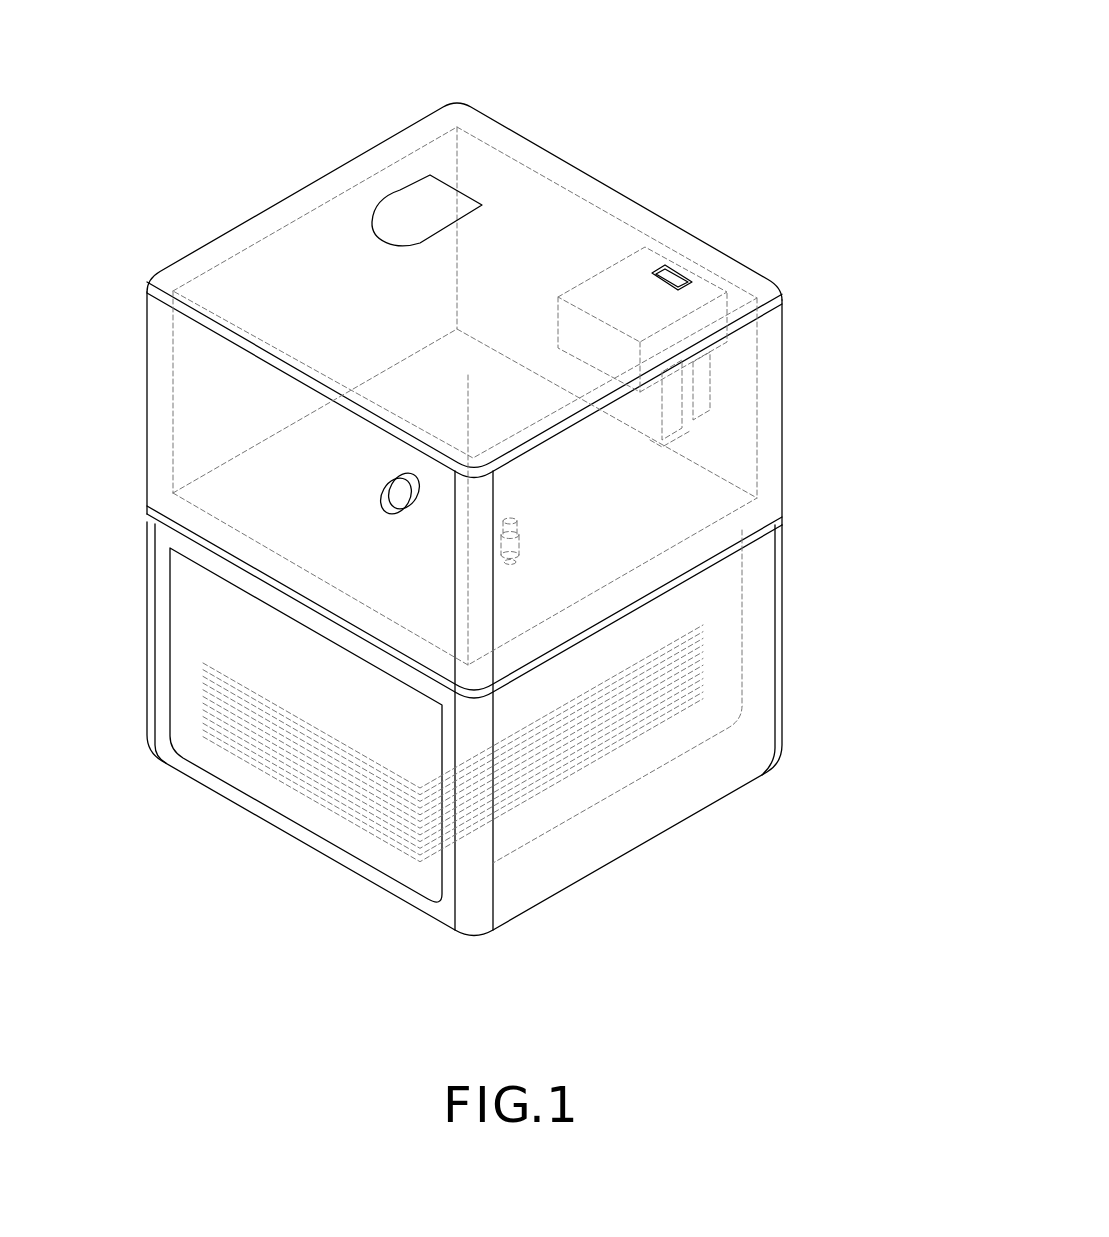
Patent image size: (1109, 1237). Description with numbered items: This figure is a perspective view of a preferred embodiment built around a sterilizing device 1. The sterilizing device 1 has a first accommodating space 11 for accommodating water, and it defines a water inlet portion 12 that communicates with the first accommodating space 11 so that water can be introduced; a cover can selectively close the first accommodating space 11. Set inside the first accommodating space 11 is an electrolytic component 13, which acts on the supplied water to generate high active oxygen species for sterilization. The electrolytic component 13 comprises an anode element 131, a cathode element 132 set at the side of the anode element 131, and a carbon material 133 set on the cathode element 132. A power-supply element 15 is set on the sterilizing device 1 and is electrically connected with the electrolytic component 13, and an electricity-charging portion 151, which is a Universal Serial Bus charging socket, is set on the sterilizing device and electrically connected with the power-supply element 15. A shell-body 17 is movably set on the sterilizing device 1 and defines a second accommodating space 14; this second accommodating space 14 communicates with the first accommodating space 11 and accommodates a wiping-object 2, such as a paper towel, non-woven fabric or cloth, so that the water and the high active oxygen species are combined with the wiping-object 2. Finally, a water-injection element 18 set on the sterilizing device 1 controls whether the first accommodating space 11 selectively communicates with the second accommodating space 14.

The sterilizing device 1 is at (525, 471).
The first accommodating space 11 is at (536, 485).
The water inlet portion 12 is at (407, 190).
The electrolytic component 13 is at (815, 424).
The anode element 131 is at (708, 388).
The cathode element 132 is at (682, 432).
The carbon material 133 is at (768, 484).
The second accommodating space 14 is at (495, 729).
The power-supply element 15 is at (706, 279).
The electricity-charging portion 151 is at (680, 265).
The shell-body 17 is at (170, 695).
The water-injection element 18 is at (392, 506).
The wiping-object 2 is at (690, 615).